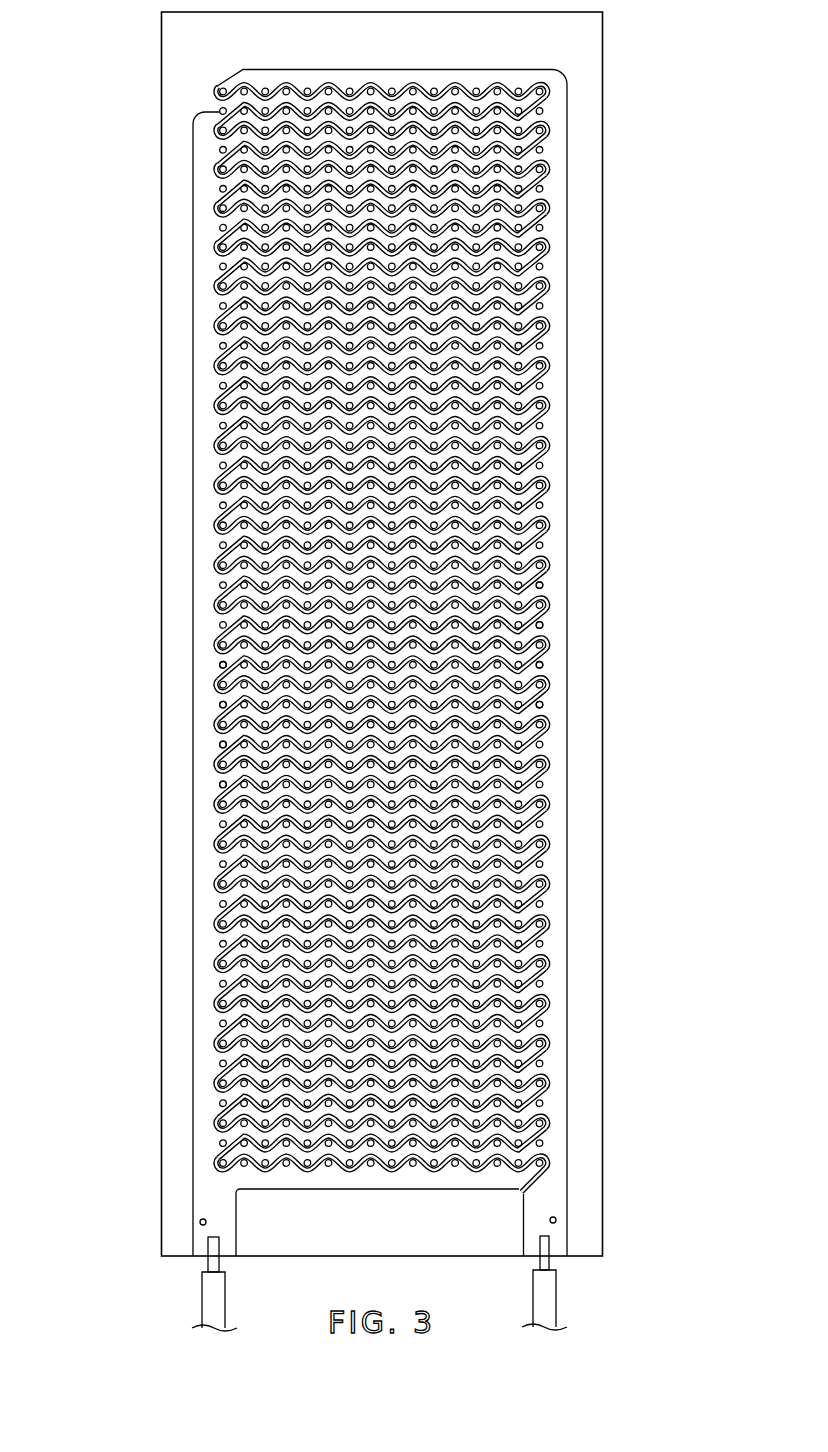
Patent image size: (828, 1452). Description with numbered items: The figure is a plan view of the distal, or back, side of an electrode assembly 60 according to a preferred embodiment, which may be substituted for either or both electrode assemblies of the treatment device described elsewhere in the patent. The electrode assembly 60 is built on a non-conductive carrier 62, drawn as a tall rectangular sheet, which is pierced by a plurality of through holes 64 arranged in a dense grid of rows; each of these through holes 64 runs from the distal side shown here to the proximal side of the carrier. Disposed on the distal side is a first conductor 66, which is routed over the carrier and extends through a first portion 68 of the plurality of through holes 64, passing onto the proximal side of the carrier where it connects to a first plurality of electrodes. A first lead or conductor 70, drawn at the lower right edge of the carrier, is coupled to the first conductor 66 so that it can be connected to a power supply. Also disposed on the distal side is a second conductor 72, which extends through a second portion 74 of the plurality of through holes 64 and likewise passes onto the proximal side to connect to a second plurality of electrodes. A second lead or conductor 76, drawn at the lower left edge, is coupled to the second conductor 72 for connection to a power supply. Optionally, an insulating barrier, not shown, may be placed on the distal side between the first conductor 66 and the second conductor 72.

The electrode assembly 60 is at (645, 30).
The non-conductive carrier 62 is at (170, 43).
The through holes 64 is at (548, 131).
The first conductor 66 is at (560, 1022).
The first portion of the plurality of through holes 68 is at (543, 625).
The first lead 70 is at (552, 1297).
The second conductor 72 is at (198, 1020).
The second portion of the plurality of through holes 74 is at (220, 705).
The second lead 76 is at (203, 1300).